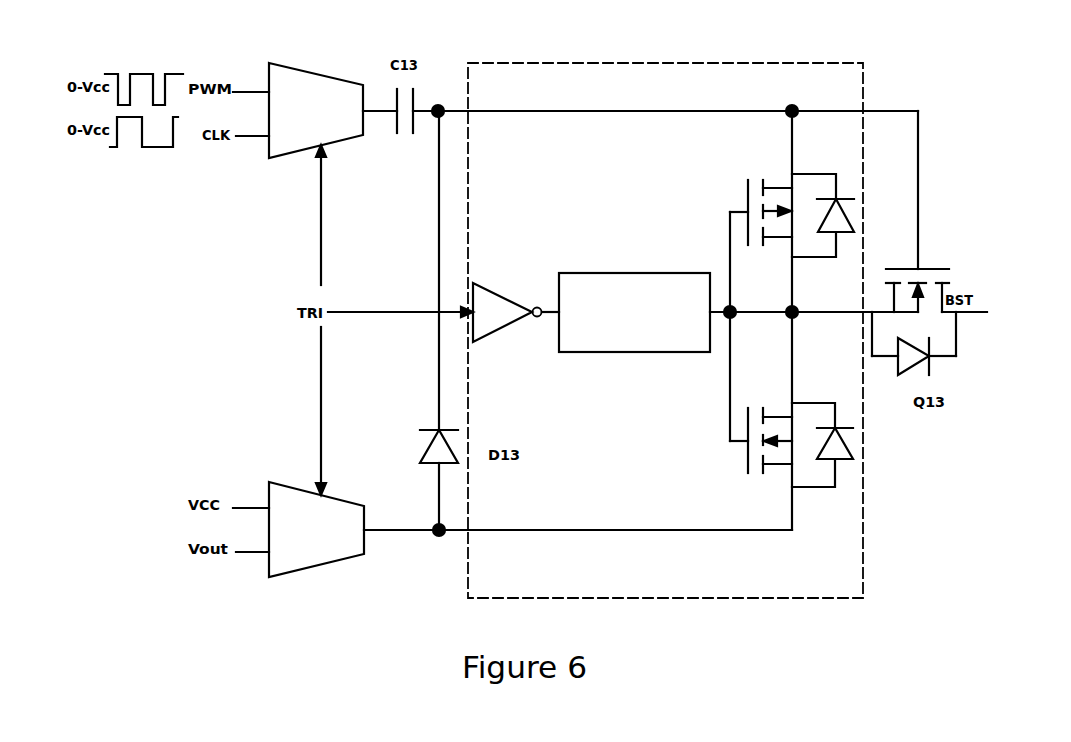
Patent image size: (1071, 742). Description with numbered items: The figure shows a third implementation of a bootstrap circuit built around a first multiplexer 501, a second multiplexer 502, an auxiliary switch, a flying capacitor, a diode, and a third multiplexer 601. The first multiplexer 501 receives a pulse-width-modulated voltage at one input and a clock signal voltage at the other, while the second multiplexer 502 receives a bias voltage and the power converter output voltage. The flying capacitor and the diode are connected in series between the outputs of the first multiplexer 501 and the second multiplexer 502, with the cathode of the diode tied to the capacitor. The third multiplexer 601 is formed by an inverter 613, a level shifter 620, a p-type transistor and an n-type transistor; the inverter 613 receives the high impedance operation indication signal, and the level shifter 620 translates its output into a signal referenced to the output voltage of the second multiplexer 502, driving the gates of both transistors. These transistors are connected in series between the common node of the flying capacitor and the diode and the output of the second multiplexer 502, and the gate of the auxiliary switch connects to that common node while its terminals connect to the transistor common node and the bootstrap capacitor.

The first multiplexer 501 is at (332, 130).
The second multiplexer 502 is at (334, 545).
The third multiplexer 601 is at (685, 584).
The inverter 613 is at (510, 321).
The level shifter 620 is at (655, 341).